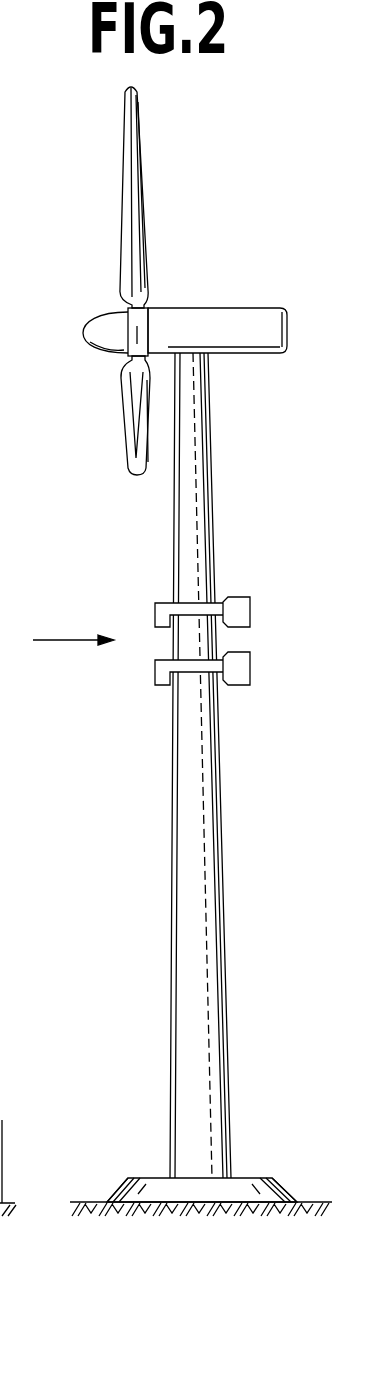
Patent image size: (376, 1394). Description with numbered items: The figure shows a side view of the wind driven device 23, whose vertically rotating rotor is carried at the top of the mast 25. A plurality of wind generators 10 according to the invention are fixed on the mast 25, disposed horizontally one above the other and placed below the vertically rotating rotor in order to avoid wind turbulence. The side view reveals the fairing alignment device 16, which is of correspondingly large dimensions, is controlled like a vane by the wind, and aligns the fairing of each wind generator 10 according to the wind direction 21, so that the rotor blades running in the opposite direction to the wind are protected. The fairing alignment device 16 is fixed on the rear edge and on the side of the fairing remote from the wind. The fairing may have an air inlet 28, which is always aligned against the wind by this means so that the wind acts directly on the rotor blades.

The wind generator 10 is at (183, 651).
The fairing alignment device 16 is at (243, 658).
The wind direction 21 is at (58, 640).
The wind driven device 23 is at (220, 323).
The mast 25 is at (197, 543).
The air inlet 28 is at (153, 675).